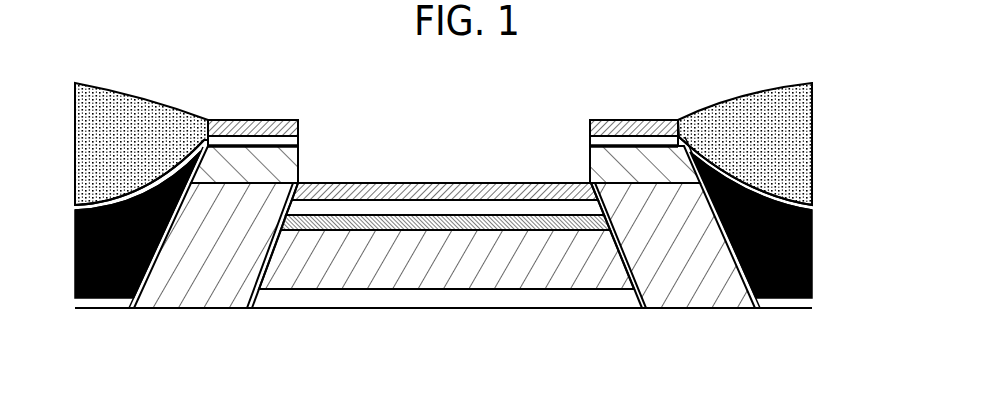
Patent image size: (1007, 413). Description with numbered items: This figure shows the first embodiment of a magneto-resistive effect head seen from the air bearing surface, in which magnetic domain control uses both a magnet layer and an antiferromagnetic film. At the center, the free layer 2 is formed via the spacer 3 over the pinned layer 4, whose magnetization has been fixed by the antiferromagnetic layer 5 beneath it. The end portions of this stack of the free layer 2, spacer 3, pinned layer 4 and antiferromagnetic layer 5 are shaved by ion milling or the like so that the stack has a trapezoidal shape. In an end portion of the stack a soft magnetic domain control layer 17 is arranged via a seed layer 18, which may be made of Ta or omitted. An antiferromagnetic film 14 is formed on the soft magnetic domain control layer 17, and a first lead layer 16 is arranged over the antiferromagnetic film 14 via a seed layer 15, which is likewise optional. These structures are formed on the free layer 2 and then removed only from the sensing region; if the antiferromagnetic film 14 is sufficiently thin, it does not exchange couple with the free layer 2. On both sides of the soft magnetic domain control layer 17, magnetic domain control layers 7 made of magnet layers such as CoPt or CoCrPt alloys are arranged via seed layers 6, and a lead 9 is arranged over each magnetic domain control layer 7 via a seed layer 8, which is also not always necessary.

The free layer 2 is at (357, 192).
The spacer 3 is at (385, 208).
The pinned layer 4 is at (415, 227).
The antiferromagnetic layer 5 is at (360, 273).
The seed layer 6 is at (812, 305).
The magnetic domain control layer 7 is at (812, 252).
The seed layer 8 is at (808, 205).
The lead 9 is at (808, 112).
The antiferromagnetic film 14 is at (597, 173).
The seed layer 15 is at (588, 142).
The first lead layer 16 is at (603, 127).
The soft magnetic domain control layer 17 is at (717, 300).
The seed layer 18 is at (640, 308).